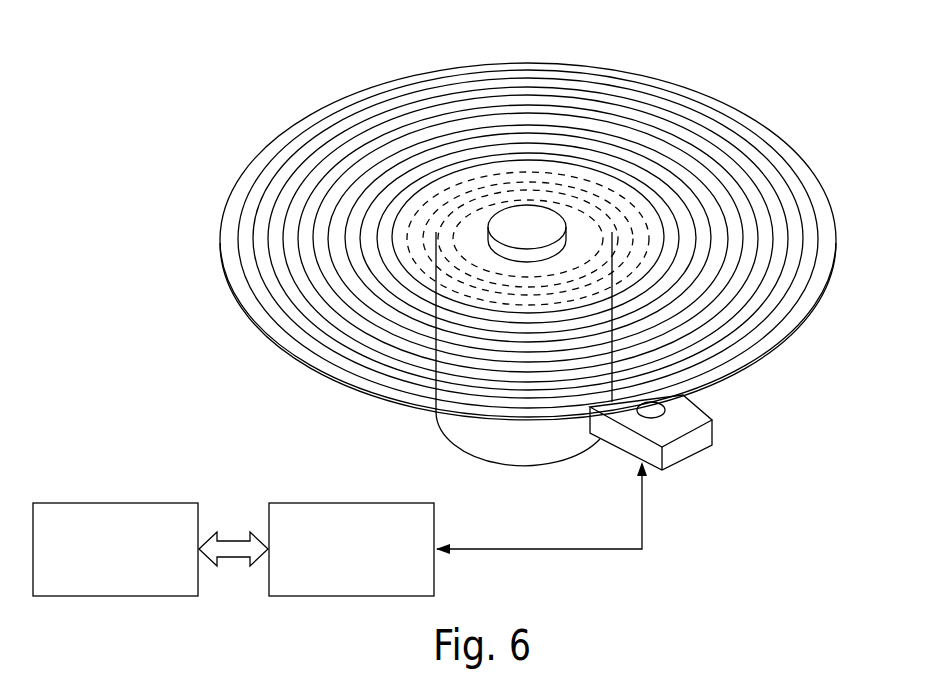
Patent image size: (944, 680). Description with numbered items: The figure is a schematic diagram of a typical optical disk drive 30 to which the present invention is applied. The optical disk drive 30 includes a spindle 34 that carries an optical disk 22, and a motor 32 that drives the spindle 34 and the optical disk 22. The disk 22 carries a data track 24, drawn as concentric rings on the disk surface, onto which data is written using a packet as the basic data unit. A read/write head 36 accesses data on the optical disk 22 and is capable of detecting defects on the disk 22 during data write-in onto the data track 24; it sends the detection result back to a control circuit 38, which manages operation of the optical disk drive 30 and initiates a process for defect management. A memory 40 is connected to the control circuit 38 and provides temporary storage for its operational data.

The optical disk drive 30 is at (778, 75).
The optical disk 22 is at (826, 243).
The data track 24 is at (805, 173).
The spindle 34 is at (527, 213).
The motor 32 is at (547, 452).
The read/write head 36 is at (692, 448).
The control circuit 38 is at (342, 503).
The memory 40 is at (107, 503).